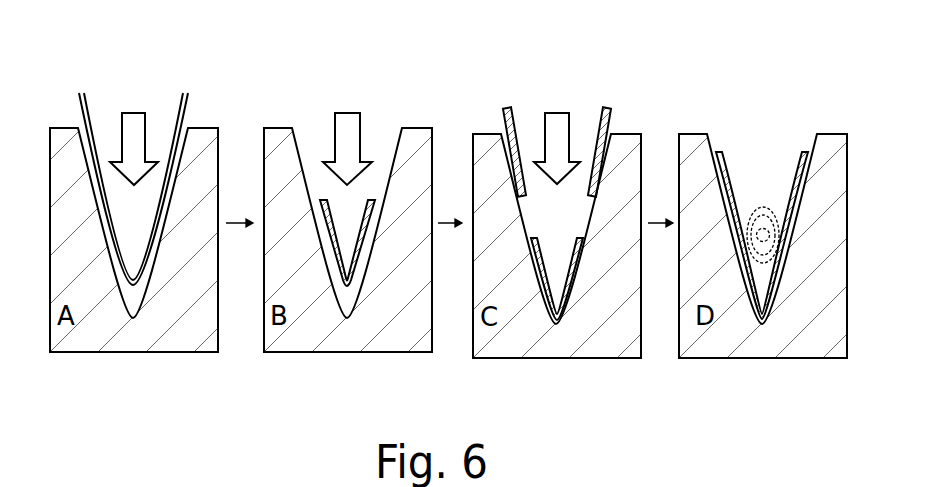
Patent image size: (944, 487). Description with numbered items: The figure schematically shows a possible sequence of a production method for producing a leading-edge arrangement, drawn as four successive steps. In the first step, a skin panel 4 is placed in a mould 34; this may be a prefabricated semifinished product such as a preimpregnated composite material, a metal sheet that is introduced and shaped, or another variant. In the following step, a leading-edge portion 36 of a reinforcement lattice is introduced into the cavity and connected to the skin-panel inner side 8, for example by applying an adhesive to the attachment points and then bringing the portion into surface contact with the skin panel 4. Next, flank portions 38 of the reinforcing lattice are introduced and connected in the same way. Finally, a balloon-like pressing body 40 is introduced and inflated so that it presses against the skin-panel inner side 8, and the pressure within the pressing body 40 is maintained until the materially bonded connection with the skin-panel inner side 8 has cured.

The skin panel 4 is at (185, 105).
The skin-panel inner side 8 is at (307, 139).
The mould 34 is at (133, 308).
The leading-edge portion 36 is at (347, 305).
The flank portions 38 is at (520, 116).
The pressing body 40 is at (752, 222).